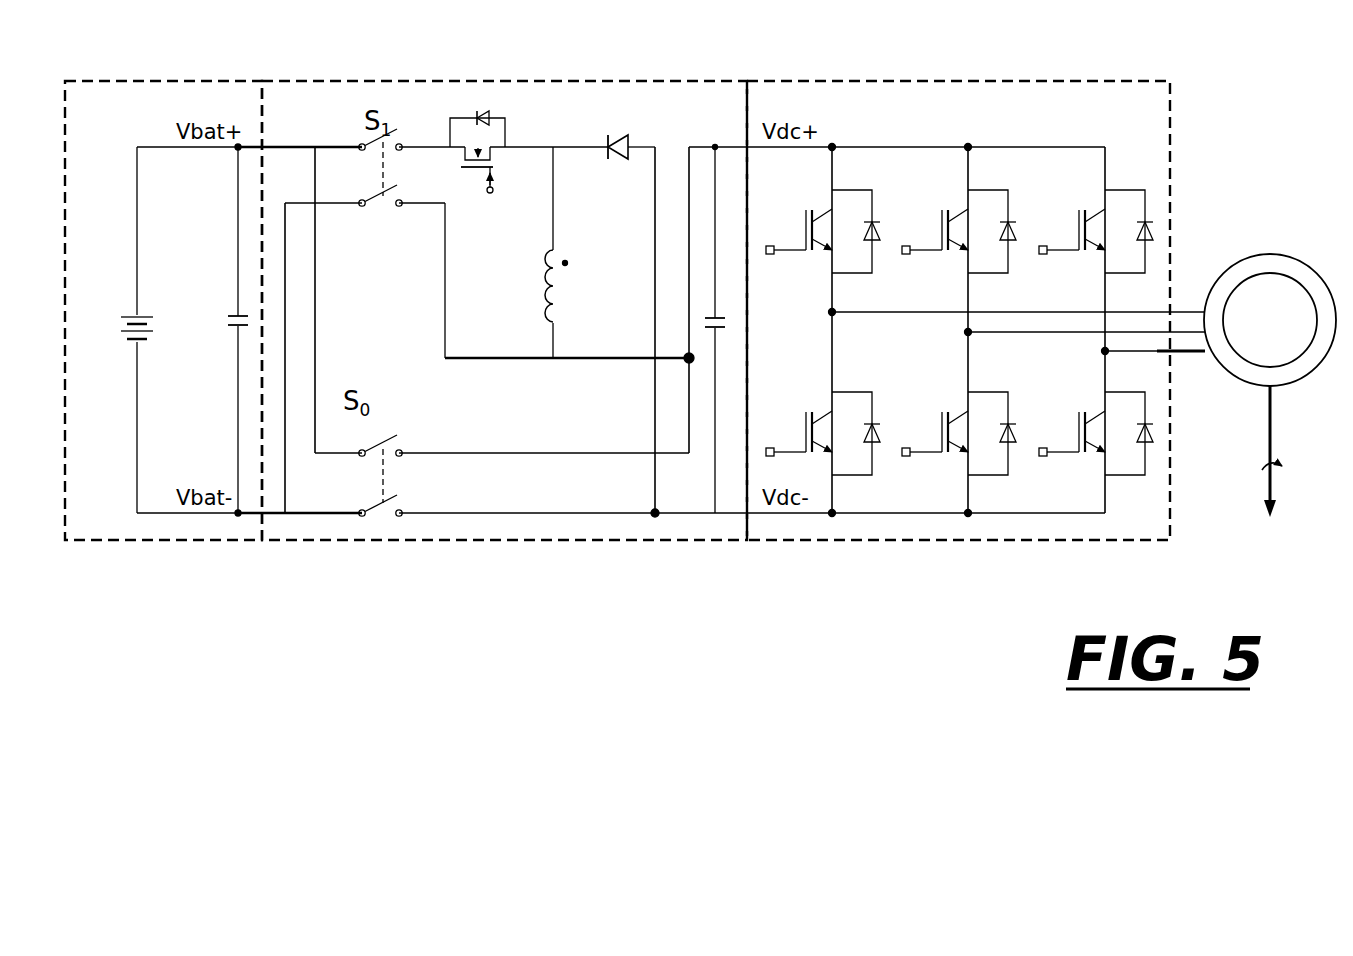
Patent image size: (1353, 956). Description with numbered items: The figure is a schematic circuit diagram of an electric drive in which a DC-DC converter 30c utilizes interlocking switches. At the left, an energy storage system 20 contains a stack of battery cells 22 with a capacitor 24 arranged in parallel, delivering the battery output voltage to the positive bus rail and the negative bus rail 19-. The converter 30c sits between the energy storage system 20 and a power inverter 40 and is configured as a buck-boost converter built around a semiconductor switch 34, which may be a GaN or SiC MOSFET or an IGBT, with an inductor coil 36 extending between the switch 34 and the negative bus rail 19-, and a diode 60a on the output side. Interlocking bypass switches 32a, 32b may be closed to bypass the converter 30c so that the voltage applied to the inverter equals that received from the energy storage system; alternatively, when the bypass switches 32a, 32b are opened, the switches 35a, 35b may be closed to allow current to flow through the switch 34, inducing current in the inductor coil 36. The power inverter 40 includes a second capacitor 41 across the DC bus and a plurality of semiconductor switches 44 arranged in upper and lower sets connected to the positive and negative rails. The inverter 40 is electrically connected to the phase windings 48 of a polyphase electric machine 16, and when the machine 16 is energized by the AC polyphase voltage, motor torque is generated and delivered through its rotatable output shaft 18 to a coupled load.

The energy storage system 20 is at (100, 81).
The converter 30c is at (600, 81).
The power inverter 40 is at (1043, 81).
The negative voltage bus rail 19- is at (313, 513).
The battery cells 22 is at (126, 357).
The capacitor 24 is at (224, 339).
The semiconductor switch 34 is at (500, 114).
The switch 35a is at (378, 158).
The switch 35b is at (386, 215).
The interlocking switch 32a is at (400, 428).
The interlocking switch 32b is at (402, 497).
The inductor coil 36 is at (548, 300).
The diode 60a is at (618, 164).
The second capacitor 41 is at (719, 308).
The semiconductor switches 44 is at (1065, 218).
The phase windings 48 is at (1113, 312).
The electric machine 16 is at (1270, 320).
The output shaft 18 is at (1276, 440).